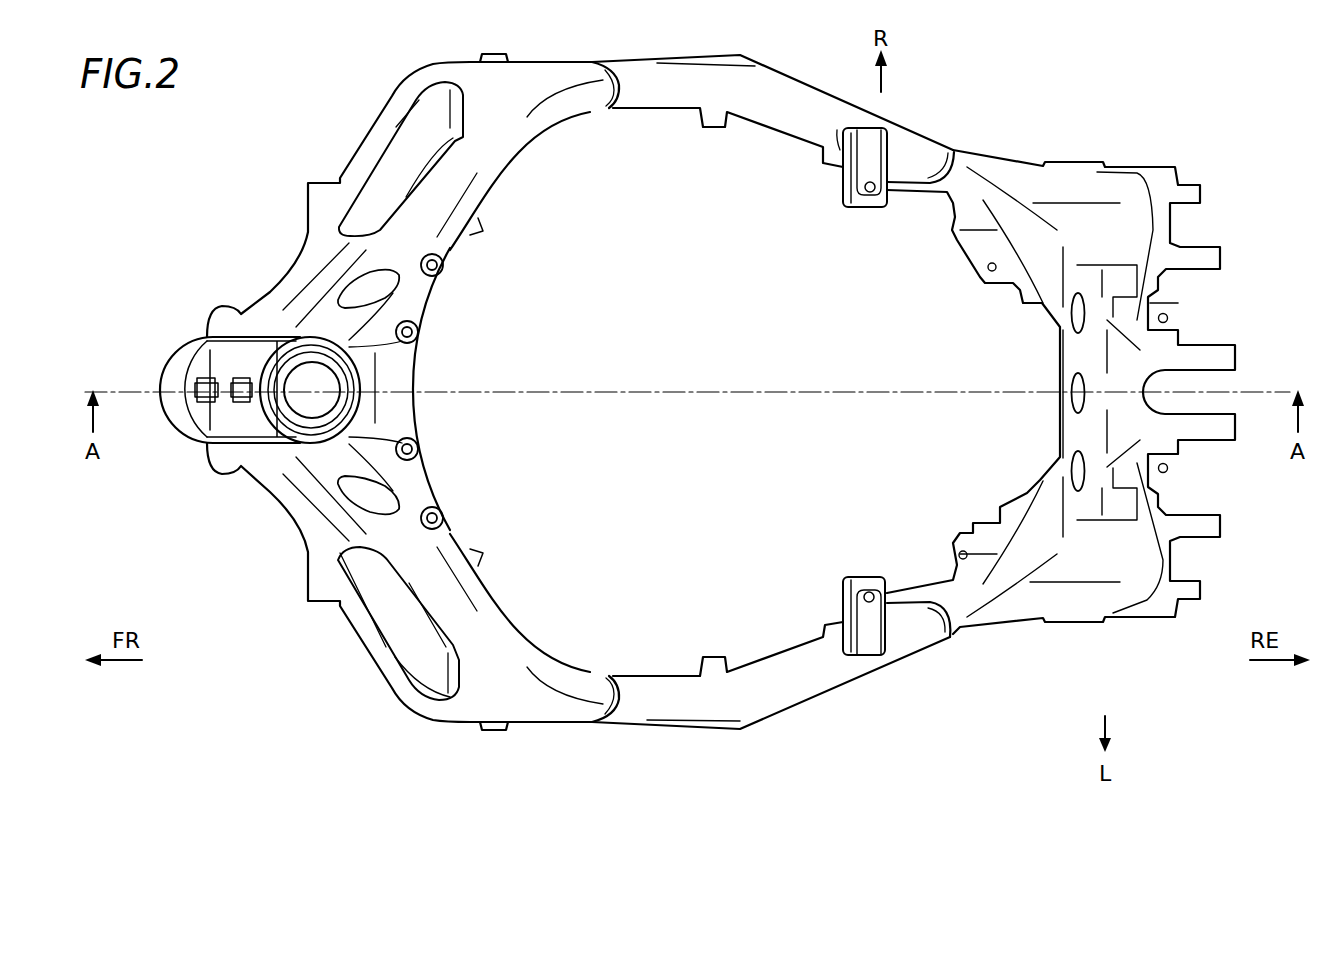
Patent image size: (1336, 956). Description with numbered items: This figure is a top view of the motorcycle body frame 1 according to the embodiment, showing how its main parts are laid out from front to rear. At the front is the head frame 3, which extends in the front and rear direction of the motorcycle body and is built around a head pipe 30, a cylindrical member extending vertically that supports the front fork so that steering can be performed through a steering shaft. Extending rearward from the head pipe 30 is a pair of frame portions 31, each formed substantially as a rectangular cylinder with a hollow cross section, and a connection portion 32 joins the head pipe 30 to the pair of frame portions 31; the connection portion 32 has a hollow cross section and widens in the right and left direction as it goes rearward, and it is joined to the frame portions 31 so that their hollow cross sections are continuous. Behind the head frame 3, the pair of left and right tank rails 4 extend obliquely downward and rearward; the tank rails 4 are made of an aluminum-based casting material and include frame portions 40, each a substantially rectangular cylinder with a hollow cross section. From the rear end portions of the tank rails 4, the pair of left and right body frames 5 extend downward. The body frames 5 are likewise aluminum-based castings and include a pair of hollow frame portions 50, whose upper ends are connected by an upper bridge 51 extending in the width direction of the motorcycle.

The motorcycle body frame 1 is at (912, 797).
The head frame 3 is at (537, 705).
The tank rails 4 is at (767, 693).
The body frames 5 is at (1020, 605).
The head pipe 30 is at (183, 425).
The frame portions 31 is at (493, 177).
The connection portion 32 is at (397, 373).
The frame portions 40 is at (787, 111).
The frame portions 50 is at (947, 195).
The upper bridge 51 is at (1080, 350).